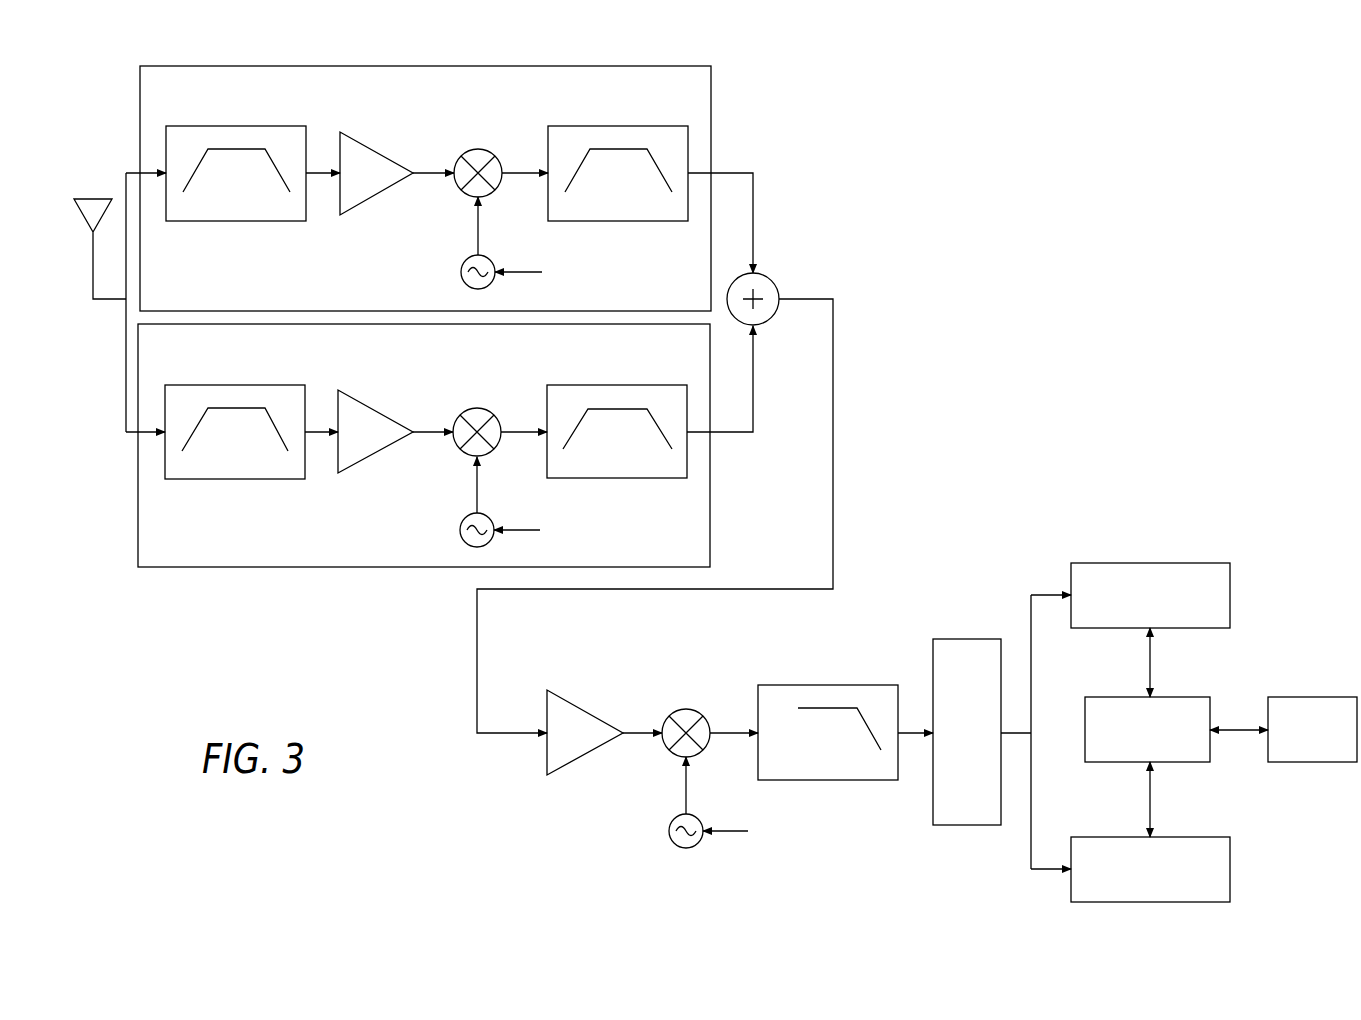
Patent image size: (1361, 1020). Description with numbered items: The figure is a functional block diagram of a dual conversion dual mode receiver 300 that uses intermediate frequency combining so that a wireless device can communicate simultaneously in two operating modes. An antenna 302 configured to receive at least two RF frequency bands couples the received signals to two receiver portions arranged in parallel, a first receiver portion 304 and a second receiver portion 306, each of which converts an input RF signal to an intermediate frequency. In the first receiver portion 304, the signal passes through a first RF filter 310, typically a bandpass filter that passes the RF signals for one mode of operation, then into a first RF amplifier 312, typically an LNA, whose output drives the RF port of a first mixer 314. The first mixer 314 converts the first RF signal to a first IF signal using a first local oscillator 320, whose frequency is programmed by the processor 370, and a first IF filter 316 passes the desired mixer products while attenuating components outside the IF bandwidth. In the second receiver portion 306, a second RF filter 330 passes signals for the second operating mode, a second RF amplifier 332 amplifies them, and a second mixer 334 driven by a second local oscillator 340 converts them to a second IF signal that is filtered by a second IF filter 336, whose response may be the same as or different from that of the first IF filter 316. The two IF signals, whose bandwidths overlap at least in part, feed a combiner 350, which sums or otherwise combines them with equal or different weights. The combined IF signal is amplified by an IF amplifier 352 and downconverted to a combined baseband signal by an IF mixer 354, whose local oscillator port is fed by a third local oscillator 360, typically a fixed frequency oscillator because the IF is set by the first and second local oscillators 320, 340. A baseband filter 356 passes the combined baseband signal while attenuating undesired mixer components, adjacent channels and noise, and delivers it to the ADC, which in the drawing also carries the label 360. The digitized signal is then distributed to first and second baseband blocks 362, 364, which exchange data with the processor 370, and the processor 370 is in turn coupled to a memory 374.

The dual conversion dual mode receiver 300 is at (1022, 113).
The antenna 302 is at (100, 199).
The first receiver portion 304 is at (712, 130).
The second receiver portion 306 is at (338, 568).
The first RF filter 310 is at (242, 126).
The first RF amplifier 312 is at (390, 160).
The first mixer 314 is at (478, 149).
The first IF filter 316 is at (632, 126).
The first local oscillator 320 is at (461, 272).
The second RF filter 330 is at (240, 385).
The second RF amplifier 332 is at (388, 418).
The second mixer 334 is at (482, 408).
The second IF filter 336 is at (577, 385).
The second local oscillator 340 is at (460, 530).
The combiner 350 is at (775, 281).
The IF amplifier 352 is at (597, 715).
The IF mixer 354 is at (690, 709).
The baseband filter 356 is at (788, 685).
The third local oscillator 360 is at (670, 824).
The first baseband processor 362 is at (1183, 563).
The second baseband processor 364 is at (1188, 837).
The processor 370 is at (1173, 697).
The memory 374 is at (1302, 697).